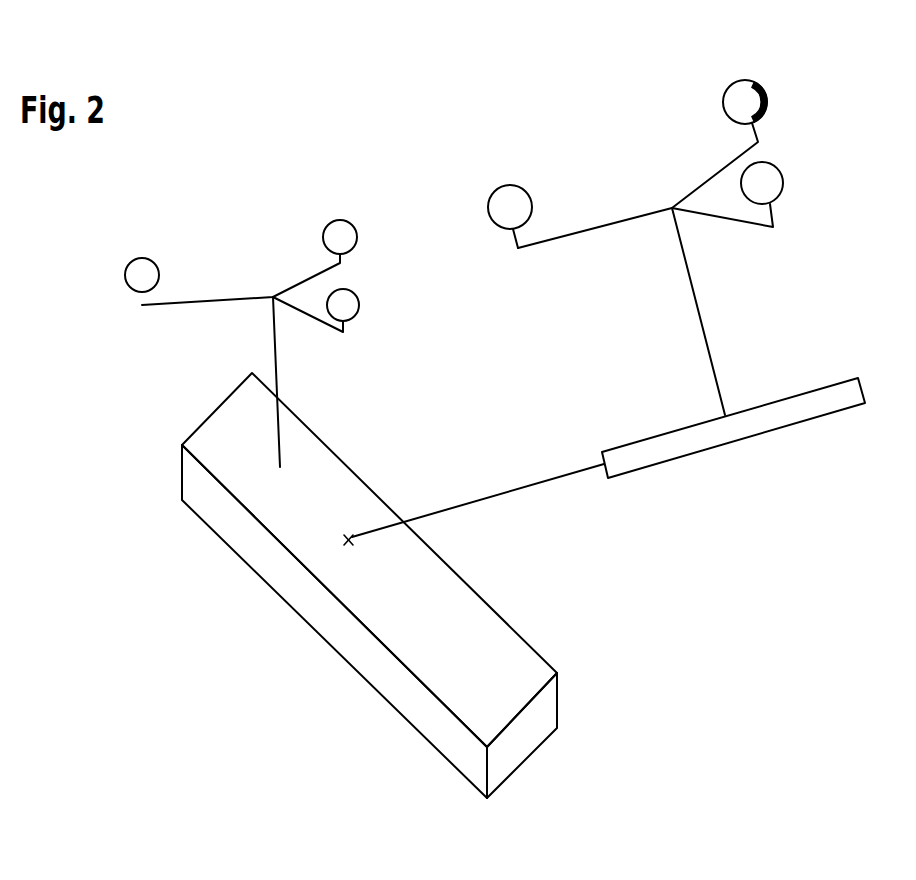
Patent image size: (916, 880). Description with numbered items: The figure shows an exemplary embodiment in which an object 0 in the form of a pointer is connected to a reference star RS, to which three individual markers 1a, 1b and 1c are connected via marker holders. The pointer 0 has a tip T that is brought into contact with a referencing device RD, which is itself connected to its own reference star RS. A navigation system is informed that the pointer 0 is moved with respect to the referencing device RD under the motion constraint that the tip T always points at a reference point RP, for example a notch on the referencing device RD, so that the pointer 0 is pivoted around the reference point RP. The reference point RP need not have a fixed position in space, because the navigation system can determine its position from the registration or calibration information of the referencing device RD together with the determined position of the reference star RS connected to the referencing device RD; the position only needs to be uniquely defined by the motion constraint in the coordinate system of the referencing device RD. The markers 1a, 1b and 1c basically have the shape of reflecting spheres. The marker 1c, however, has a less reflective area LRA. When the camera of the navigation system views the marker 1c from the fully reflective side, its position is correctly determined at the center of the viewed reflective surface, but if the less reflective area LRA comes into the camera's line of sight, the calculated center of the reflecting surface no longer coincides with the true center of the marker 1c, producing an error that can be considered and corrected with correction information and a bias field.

The marker 1a is at (511, 182).
The marker 1b is at (783, 183).
The marker 1c is at (763, 89).
The less reflective area LRA is at (767, 107).
The reference star RS is at (692, 286).
The object 0 is at (732, 462).
The tip T is at (358, 520).
The reference point RP is at (360, 558).
The referencing device RD is at (398, 752).